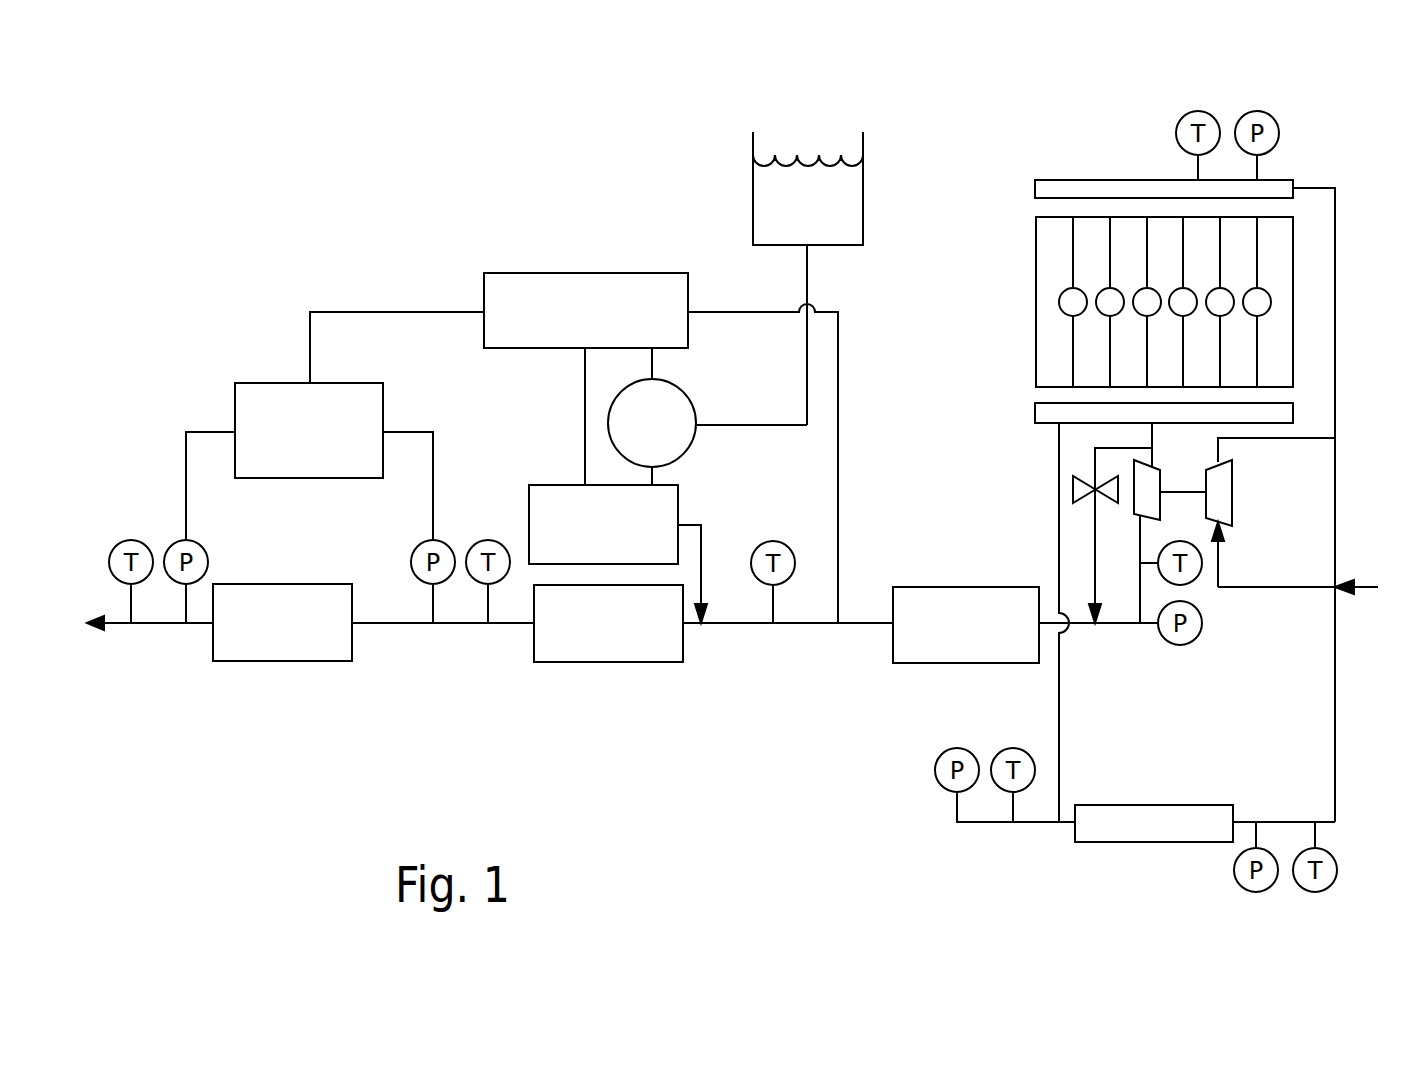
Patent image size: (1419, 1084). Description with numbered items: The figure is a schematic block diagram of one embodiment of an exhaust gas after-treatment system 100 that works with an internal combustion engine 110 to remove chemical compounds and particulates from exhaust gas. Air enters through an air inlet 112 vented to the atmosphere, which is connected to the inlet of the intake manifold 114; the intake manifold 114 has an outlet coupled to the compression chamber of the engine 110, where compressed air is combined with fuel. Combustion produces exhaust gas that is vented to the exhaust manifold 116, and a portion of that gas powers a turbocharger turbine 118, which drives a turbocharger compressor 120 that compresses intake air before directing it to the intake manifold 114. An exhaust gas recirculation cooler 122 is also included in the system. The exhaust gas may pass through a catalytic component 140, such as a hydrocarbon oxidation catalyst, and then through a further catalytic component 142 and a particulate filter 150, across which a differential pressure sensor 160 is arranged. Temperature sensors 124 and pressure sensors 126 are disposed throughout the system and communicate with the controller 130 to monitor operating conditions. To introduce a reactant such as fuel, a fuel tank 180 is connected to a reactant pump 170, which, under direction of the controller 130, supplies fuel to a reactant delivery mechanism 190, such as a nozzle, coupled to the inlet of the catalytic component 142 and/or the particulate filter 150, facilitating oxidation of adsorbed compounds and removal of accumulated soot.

The exhaust gas after-treatment system 100 is at (265, 147).
The internal combustion engine 110 is at (1272, 275).
The air inlet 112 is at (1365, 590).
The intake manifold 114 is at (1105, 180).
The exhaust manifold 116 is at (1188, 425).
The turbocharger turbine 118 is at (1135, 513).
The turbocharger compressor 120 is at (1213, 490).
The exhaust gas recirculation (EGR) cooler 122 is at (1150, 843).
The temperature sensors 124 is at (1182, 120).
The pressure sensors 126 is at (1279, 133).
The controller 130 is at (567, 337).
The catalytic component 140 is at (970, 663).
The catalytic component 142 is at (605, 662).
The particulate filter 150 is at (284, 584).
The differential pressure sensor 160 is at (276, 383).
The reactant pump 170 is at (633, 451).
The fuel tank 180 is at (753, 191).
The reactant delivery mechanism 190 is at (552, 485).